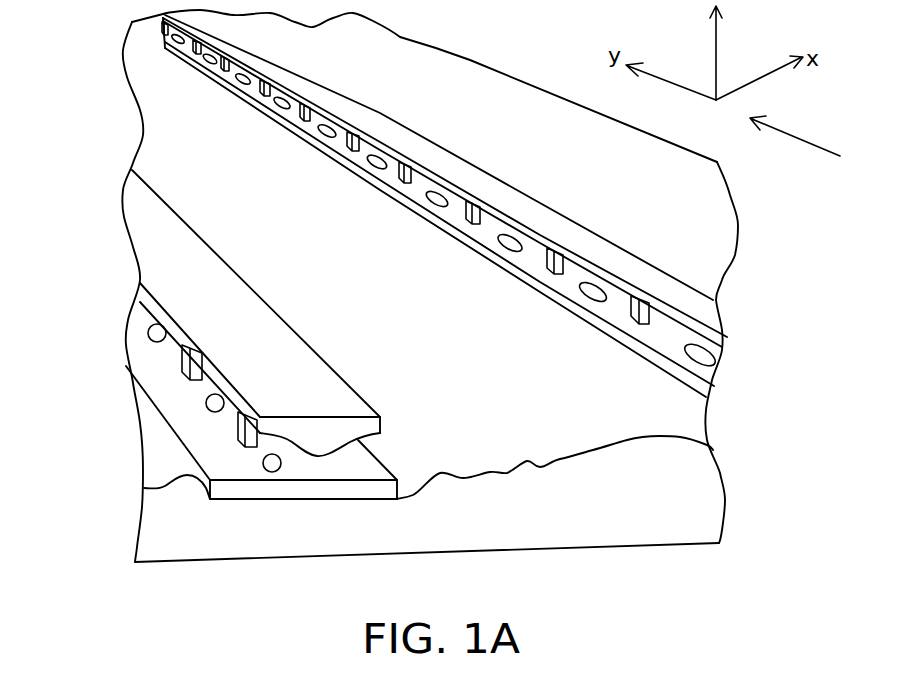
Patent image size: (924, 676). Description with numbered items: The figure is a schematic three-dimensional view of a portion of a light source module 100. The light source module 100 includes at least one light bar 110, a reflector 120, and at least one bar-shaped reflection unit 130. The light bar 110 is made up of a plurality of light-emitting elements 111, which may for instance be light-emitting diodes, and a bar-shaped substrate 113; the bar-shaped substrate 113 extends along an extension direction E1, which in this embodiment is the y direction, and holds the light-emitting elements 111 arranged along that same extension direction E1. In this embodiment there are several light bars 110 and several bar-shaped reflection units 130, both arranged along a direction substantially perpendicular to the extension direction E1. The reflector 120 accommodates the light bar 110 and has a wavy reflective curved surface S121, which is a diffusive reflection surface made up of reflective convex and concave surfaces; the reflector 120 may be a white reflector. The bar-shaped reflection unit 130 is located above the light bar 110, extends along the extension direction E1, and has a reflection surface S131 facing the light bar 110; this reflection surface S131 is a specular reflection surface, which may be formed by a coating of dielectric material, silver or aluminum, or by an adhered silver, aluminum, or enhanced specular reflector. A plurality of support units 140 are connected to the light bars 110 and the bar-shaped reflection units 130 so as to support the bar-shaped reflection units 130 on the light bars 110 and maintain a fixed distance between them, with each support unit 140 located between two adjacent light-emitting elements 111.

The light source module 100 is at (787, 610).
The light bar 110 is at (67, 368).
The light-emitting elements 111 is at (215, 403).
The bar-shaped substrate 113 is at (195, 428).
The reflector 120 is at (169, 124).
The bar-shaped reflection unit 130 is at (157, 252).
The support units 140 is at (237, 428).
The wavy reflective curved surface S121 is at (558, 457).
The reflection surface S131 is at (351, 442).
The extension direction E1 is at (795, 133).